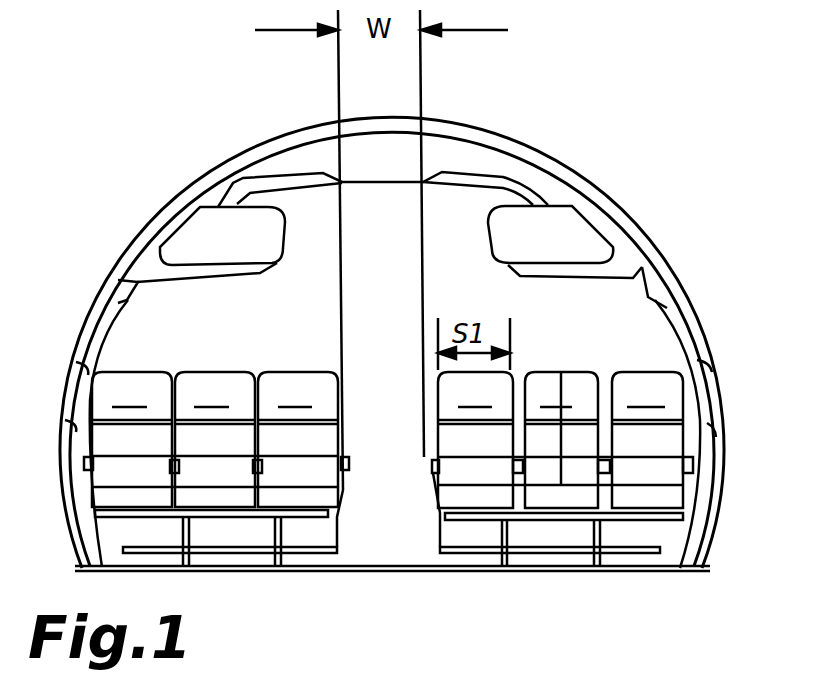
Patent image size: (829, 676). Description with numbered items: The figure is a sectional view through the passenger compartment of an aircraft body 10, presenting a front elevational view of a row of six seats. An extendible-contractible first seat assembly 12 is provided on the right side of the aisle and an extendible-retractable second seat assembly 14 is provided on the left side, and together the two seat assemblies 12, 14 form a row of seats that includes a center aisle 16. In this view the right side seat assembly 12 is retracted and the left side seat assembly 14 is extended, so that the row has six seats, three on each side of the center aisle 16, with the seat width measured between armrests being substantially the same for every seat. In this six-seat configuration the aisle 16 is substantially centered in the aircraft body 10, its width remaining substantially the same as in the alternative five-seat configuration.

The aircraft body 10 is at (196, 186).
The first seat assembly 12 is at (200, 362).
The second seat assembly 14 is at (575, 362).
The center aisle 16 is at (387, 505).